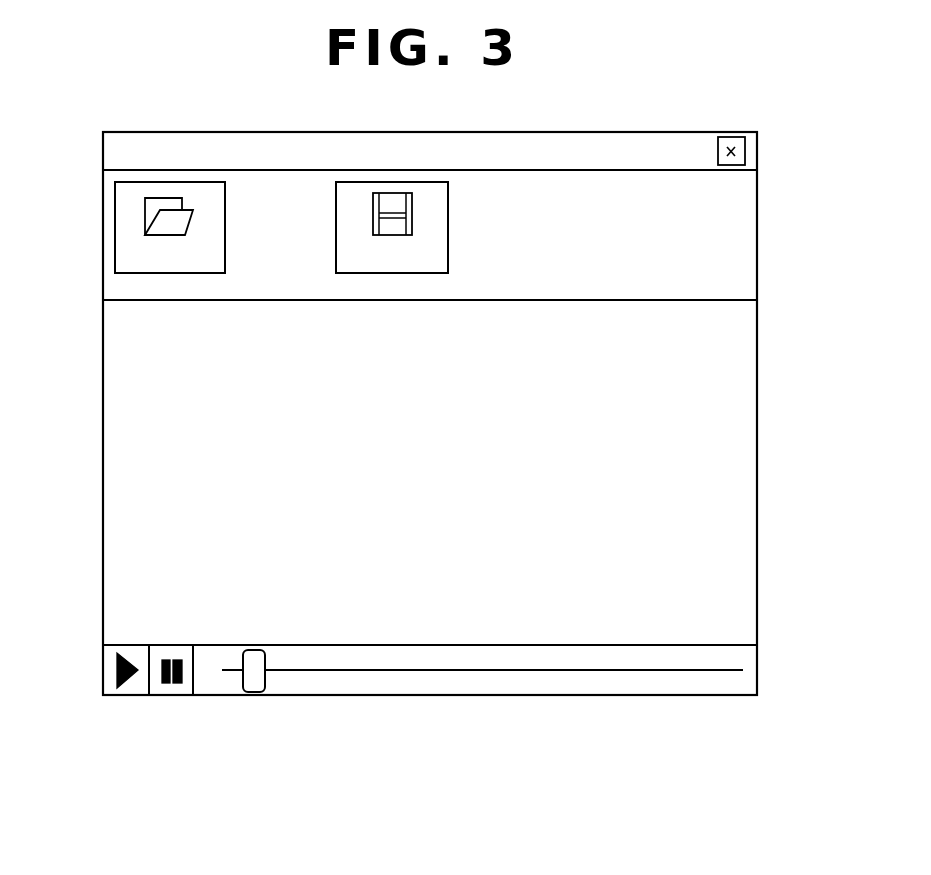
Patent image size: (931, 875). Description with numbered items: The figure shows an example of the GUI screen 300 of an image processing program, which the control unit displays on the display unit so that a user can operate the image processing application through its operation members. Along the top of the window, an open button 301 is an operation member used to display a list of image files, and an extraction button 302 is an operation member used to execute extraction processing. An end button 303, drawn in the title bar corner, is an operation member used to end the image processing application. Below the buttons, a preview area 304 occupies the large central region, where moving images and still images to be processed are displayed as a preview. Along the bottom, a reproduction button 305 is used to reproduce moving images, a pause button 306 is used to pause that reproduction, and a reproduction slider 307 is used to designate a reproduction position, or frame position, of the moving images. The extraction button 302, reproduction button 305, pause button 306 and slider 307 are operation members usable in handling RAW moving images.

The GUI screen 300 is at (758, 480).
The open button 301 is at (113, 212).
The extraction button 302 is at (448, 203).
The end button 303 is at (731, 137).
The preview area 304 is at (748, 345).
The reproduction button 305 is at (112, 695).
The pause button 306 is at (173, 695).
The reproduction slider 307 is at (252, 692).